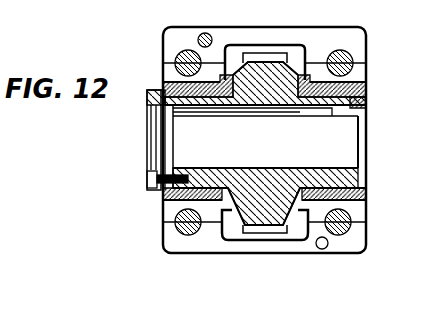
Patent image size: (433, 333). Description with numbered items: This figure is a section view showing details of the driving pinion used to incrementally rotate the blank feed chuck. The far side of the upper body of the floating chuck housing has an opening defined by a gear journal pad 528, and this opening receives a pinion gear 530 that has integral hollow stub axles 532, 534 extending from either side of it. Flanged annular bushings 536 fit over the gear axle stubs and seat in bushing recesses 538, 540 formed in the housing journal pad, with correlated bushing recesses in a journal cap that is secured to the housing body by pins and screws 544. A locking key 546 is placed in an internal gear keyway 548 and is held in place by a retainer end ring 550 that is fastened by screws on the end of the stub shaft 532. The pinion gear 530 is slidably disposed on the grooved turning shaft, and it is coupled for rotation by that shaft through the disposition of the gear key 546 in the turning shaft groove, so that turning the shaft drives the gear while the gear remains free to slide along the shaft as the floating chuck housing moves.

The gear journal pad 528 is at (283, 6).
The pinion gear 530 is at (268, 190).
The hollow stub axle 532 is at (197, 108).
The hollow stub axle 534 is at (366, 102).
The flanged annular bushings 536 is at (163, 83).
The bushing recess 538 is at (165, 63).
The bushing recess 540 is at (366, 194).
The pins and screws 544 is at (190, 50).
The locking key 546 is at (223, 110).
The internal gear keyway 548 is at (240, 108).
The retainer end ring 550 is at (150, 112).